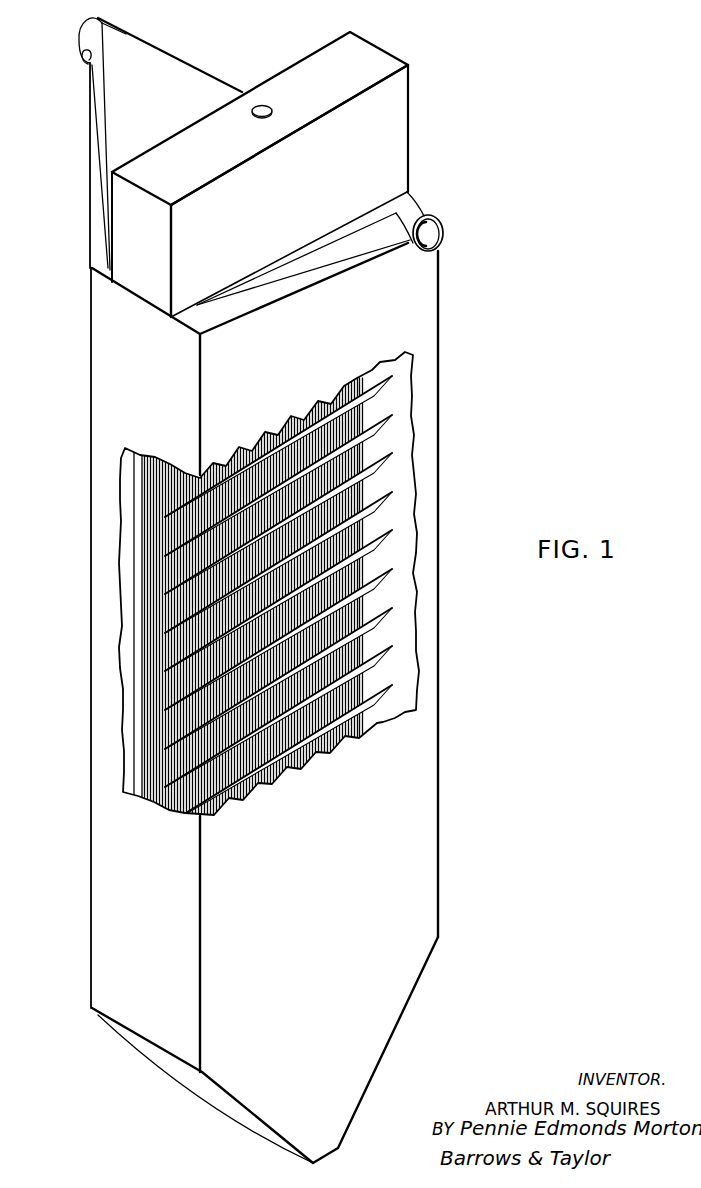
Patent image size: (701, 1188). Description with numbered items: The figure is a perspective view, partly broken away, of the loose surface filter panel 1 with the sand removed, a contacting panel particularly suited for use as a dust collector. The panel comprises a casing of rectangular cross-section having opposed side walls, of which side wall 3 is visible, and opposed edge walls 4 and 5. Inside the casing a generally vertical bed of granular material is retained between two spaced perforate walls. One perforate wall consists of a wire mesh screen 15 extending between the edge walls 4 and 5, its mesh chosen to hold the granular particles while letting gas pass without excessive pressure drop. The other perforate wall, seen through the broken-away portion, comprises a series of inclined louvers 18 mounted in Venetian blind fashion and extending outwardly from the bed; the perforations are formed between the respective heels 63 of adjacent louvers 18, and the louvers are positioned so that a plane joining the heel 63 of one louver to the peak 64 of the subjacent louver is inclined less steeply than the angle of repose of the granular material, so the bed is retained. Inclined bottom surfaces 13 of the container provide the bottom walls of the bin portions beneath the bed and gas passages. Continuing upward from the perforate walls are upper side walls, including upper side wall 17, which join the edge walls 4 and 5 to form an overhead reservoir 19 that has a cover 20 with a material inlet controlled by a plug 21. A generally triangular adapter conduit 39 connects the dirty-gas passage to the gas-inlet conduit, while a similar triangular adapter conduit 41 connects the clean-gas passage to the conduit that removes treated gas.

The loose surface filter panel 1 is at (132, 868).
The side wall 3 is at (362, 890).
The edge wall 4 is at (113, 967).
The edge wall 5 is at (398, 442).
The inclined bottom surfaces 13 is at (213, 1100).
The wire mesh screen 15 is at (160, 657).
The upper side wall 17 is at (310, 203).
The louvers 18 is at (357, 478).
The overhead reservoir 19 is at (390, 120).
The cover 20 is at (363, 62).
The plug 21 is at (266, 105).
The adapter conduit 39 is at (395, 206).
The adapter conduit 41 is at (153, 70).
The heel 63 is at (378, 592).
The peak 64 is at (390, 568).